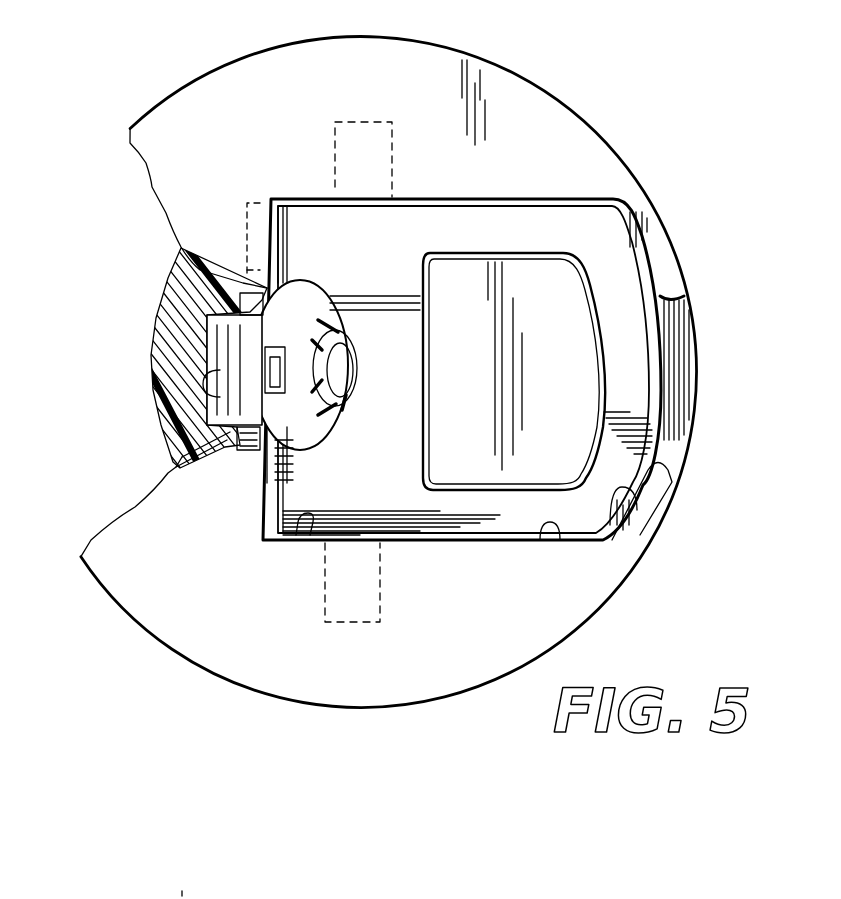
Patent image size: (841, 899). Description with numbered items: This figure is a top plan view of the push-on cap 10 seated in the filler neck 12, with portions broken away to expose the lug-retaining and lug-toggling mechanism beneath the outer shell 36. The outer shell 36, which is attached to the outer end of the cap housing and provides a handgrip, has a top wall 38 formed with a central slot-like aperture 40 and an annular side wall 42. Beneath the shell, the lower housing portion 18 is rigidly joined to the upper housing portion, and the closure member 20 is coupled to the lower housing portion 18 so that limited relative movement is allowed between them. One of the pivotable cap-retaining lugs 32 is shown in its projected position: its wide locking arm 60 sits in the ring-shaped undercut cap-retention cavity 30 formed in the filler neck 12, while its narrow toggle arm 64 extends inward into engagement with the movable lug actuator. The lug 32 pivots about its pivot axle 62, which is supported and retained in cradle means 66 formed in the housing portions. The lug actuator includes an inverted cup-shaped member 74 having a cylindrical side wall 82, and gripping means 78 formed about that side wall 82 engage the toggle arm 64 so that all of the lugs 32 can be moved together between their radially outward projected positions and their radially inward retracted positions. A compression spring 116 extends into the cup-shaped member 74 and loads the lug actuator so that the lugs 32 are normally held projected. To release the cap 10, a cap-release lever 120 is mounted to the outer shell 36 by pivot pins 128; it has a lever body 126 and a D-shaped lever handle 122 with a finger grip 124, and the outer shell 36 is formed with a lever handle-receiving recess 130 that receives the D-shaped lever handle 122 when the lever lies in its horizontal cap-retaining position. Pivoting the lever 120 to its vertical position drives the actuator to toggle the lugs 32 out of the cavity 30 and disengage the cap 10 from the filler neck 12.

The push-on cap 10 is at (652, 136).
The filler neck 12 is at (170, 287).
The lower housing portion 18 is at (290, 470).
The closure member 20 is at (296, 314).
The cap-retention cavity 30 is at (232, 397).
The cap-retaining lug 32 is at (175, 451).
The outer shell 36 is at (556, 94).
The top wall 38 is at (480, 78).
The slot-like aperture 40 is at (305, 519).
The annular side wall 42 is at (95, 590).
The wide locking arm 60 is at (213, 340).
The pivot axle 62 is at (260, 273).
The narrow toggle arm 64 is at (327, 420).
The cradle means 66 is at (283, 370).
The inverted cup-shaped member 74 is at (342, 423).
The gripping means 78 is at (300, 305).
The cylindrical side wall 82 is at (330, 310).
The compression spring 116 is at (352, 380).
The cap-release lever 120 is at (590, 196).
The D-shaped lever handle 122 is at (628, 363).
The finger grip 124 is at (660, 452).
The lever body 126 is at (388, 505).
The pivot pins 128 is at (405, 148).
The lever handle-receiving recess 130 is at (557, 540).